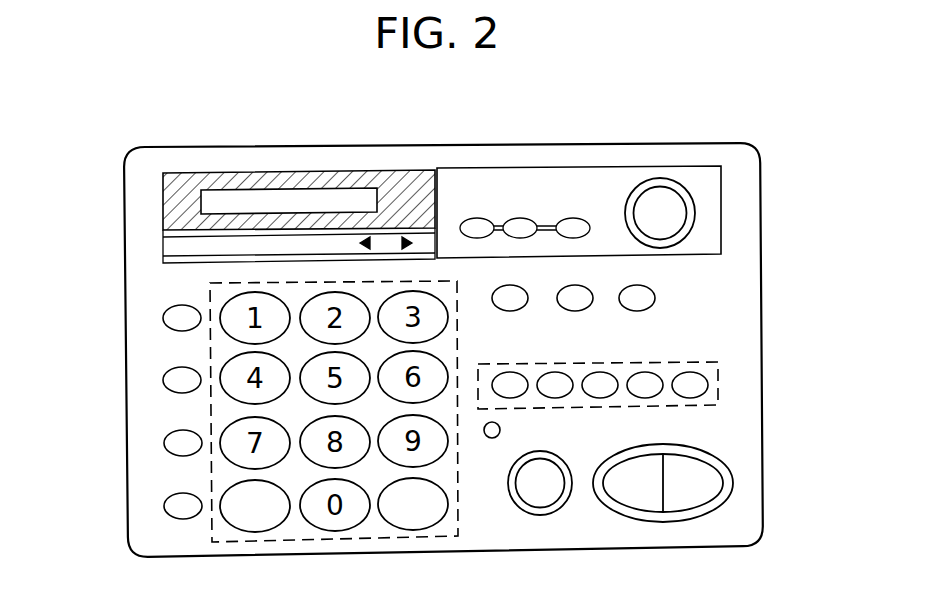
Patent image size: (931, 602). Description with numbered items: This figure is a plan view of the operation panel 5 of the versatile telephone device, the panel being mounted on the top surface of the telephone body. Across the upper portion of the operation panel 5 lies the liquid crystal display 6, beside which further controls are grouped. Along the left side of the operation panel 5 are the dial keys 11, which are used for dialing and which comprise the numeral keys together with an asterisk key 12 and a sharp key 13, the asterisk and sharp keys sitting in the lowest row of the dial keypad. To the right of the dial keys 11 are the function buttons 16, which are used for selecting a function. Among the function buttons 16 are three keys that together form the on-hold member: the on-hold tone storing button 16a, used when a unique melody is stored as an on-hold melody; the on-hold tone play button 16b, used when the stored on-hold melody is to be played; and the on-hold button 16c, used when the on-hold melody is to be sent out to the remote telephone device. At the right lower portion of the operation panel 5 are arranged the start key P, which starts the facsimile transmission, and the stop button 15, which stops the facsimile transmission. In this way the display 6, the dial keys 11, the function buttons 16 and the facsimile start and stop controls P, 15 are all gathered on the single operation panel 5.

The operation panel 5 is at (526, 137).
The liquid crystal display 6 is at (292, 197).
The dial keys 11 is at (212, 480).
The asterisk key 12 is at (263, 518).
The sharp key 13 is at (417, 523).
The stop button 15 is at (542, 505).
The start key P is at (683, 502).
The function buttons 16 is at (643, 342).
The on-hold tone storing button 16a is at (513, 301).
The on-hold tone play button 16b is at (580, 301).
The on-hold button 16c is at (643, 300).